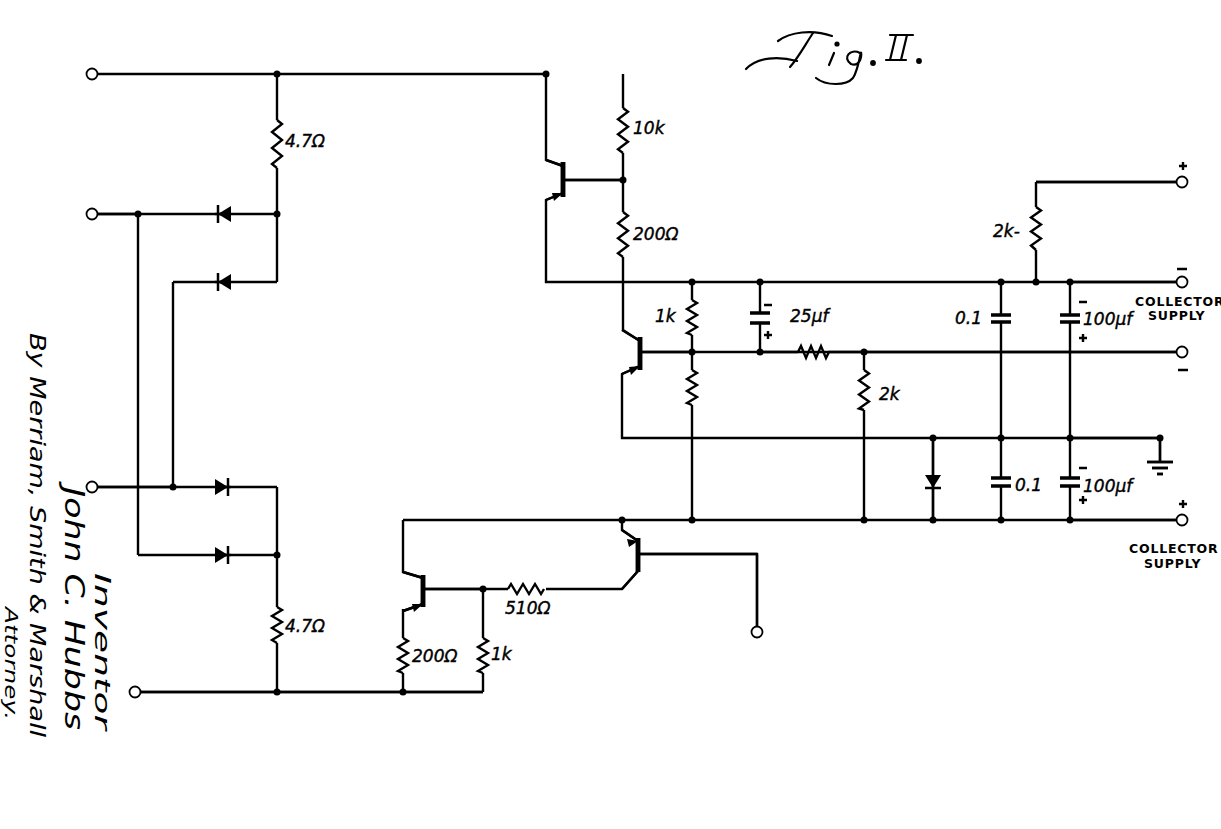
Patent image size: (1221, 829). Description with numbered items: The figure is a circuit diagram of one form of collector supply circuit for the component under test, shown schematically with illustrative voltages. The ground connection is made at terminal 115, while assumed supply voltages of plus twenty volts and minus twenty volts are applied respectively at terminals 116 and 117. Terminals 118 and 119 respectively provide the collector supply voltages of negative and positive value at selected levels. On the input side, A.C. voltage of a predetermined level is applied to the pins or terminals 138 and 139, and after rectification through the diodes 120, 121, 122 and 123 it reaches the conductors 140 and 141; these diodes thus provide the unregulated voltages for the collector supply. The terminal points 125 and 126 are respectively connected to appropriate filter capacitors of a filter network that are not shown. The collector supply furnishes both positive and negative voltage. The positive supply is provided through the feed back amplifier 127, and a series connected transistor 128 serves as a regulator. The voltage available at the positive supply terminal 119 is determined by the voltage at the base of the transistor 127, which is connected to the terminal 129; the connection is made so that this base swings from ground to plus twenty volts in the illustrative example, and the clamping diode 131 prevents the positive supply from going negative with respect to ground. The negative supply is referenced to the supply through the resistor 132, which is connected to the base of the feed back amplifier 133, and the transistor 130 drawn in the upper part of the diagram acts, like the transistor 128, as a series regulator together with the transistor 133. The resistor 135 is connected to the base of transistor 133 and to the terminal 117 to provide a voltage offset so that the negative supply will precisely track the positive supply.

The ground terminal 115 is at (1158, 436).
The terminal 116 is at (1178, 178).
The terminal 117 is at (1180, 348).
The terminal 118 is at (1178, 279).
The terminal 119 is at (1178, 519).
The diode 120 is at (236, 208).
The diode 121 is at (224, 290).
The diode 122 is at (225, 478).
The diode 123 is at (222, 563).
The terminal point 125 is at (97, 70).
The terminal point 126 is at (140, 688).
The feed back amplifier 127 is at (642, 562).
The transistor 128 is at (420, 591).
The terminal 129 is at (762, 630).
The transistor 130 is at (557, 180).
The clamping diode 131 is at (928, 488).
The resistor 132 is at (698, 393).
The feed back amplifier 133 is at (636, 353).
The resistor 135 is at (834, 374).
The terminal 138 is at (97, 210).
The terminal 139 is at (108, 473).
The conductor 140 is at (382, 74).
The conductor 141 is at (356, 694).